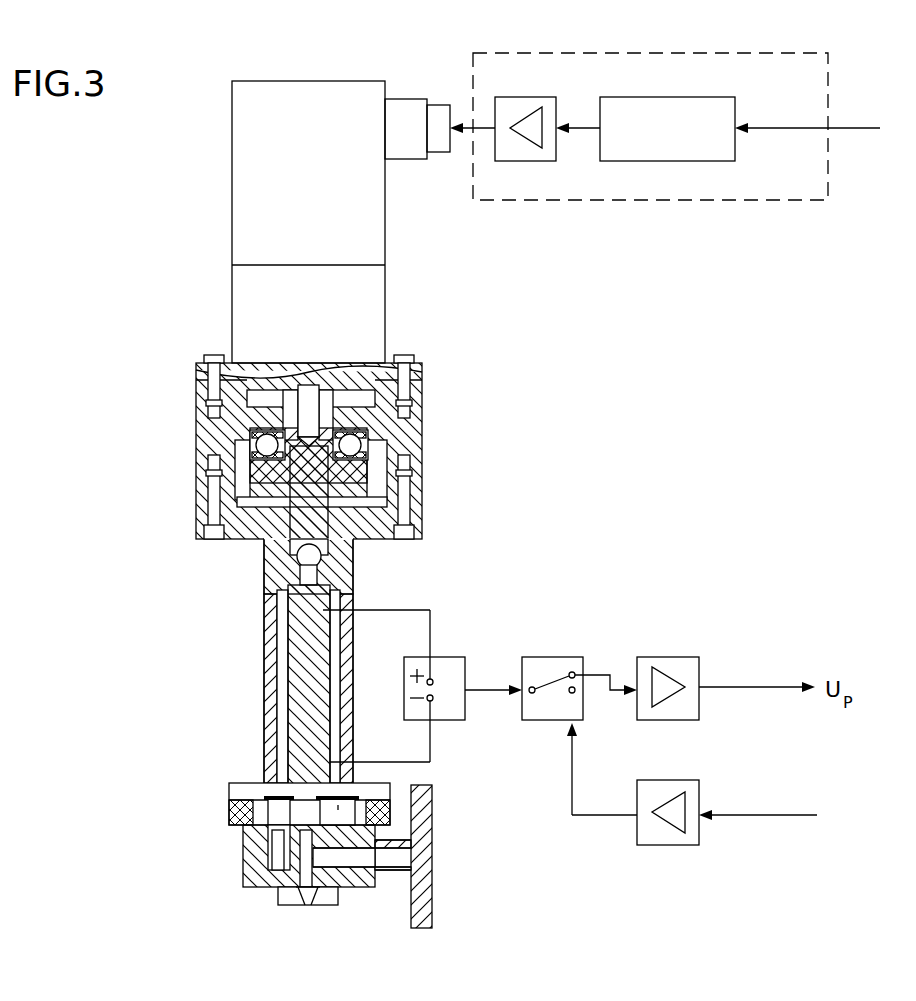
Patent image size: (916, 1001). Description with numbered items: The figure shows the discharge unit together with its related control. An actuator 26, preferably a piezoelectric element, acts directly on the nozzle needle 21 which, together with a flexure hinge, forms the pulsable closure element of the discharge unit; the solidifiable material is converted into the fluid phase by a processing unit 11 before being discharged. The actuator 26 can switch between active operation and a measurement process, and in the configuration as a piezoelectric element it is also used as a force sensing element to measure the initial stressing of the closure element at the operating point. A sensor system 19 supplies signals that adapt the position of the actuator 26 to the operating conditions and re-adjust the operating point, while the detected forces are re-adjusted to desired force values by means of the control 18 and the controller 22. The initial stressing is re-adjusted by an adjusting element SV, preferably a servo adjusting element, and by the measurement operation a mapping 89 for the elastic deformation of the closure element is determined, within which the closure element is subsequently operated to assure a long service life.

The adjusting element SV is at (210, 233).
The control 18 is at (683, 178).
The controller 22 is at (628, 127).
The sensor system 19 is at (448, 635).
The actuator 26 is at (302, 670).
The processing unit 11 is at (422, 797).
The nozzle needle 21 is at (300, 858).
The mapping 89 is at (711, 784).